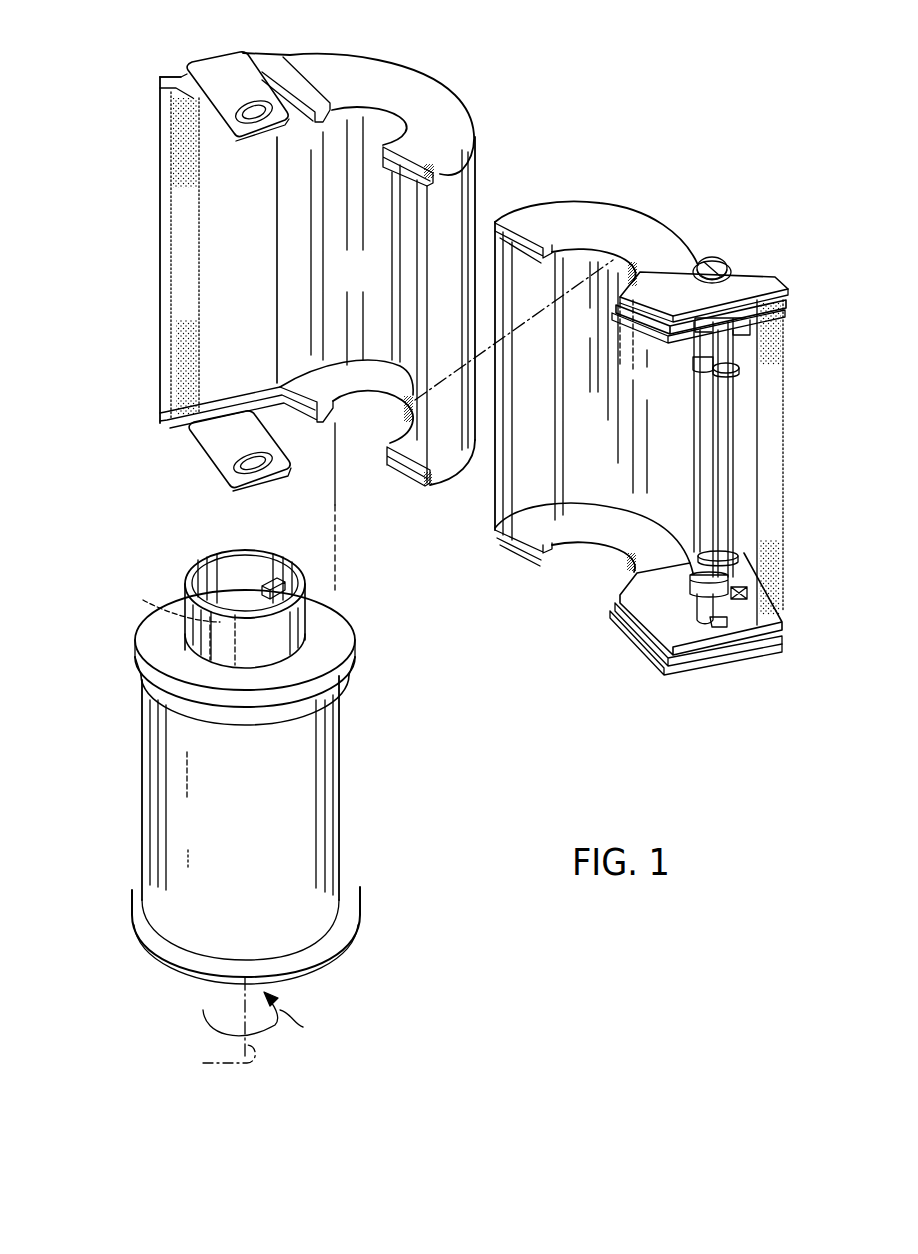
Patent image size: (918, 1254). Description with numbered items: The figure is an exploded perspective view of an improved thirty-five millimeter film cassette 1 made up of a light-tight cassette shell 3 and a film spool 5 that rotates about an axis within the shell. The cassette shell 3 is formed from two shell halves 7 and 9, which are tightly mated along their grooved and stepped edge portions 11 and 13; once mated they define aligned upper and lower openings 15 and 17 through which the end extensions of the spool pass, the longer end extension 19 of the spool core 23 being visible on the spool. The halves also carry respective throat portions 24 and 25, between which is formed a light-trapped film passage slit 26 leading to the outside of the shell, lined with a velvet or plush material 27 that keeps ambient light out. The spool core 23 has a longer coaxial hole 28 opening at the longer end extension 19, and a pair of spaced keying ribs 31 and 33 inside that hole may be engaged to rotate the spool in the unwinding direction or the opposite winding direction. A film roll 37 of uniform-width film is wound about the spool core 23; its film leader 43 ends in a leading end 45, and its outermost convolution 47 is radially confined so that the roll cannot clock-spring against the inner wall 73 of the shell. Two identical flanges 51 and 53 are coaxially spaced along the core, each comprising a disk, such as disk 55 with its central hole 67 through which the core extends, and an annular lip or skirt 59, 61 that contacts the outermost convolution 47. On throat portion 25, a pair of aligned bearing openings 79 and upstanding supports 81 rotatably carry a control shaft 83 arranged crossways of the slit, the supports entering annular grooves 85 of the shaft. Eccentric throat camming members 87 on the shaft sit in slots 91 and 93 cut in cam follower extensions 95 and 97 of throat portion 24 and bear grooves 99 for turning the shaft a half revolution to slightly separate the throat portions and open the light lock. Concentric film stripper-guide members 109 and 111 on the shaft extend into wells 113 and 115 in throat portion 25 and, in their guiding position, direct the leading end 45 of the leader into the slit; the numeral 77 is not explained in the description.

The film cassette 1 is at (573, 102).
The cassette shell 3 is at (479, 153).
The film spool 5 is at (355, 780).
The shell half 7 is at (418, 62).
The shell half 9 is at (616, 208).
The grooved and stepped edge portion 11 is at (182, 99).
The grooved and stepped edge portion 13 is at (785, 302).
The upper opening 15 is at (372, 110).
The lower opening 17 is at (580, 256).
The longer end extension 19 is at (185, 581).
The spool core 23 is at (278, 640).
The throat portion 24 is at (178, 78).
The throat portion 25 is at (742, 265).
The film passage slit 26 is at (218, 272).
The velvet or plush material 27 is at (183, 180).
The longer coaxial hole 28 is at (201, 562).
The keying rib 31 is at (268, 577).
The keying rib 33 is at (198, 626).
The film roll 37 is at (141, 758).
The film leader 43 is at (278, 840).
The leading end 45 is at (308, 810).
The outermost convolution 47 is at (167, 812).
The flange 51 is at (352, 664).
The flange 53 is at (352, 924).
The disk 55 is at (152, 640).
The annular lip 59 is at (160, 682).
The annular lip 61 is at (315, 962).
The central hole 67 is at (282, 636).
The inner wall 73 is at (365, 292).
The flange edge 77 is at (347, 688).
The bearing opening 79 is at (700, 277).
The upstanding support 81 is at (722, 373).
The control shaft 83 is at (698, 460).
The annular groove 85 is at (698, 359).
The throat camming member 87 is at (710, 257).
The slot 91 is at (254, 106).
The slot 93 is at (252, 460).
The cam follower extension 95 is at (242, 78).
The cam follower extension 97 is at (263, 447).
The groove 99 is at (718, 262).
The film stripper-guide member 109 is at (708, 340).
The film stripper-guide member 111 is at (712, 622).
The well 113 is at (760, 355).
The well 115 is at (743, 600).